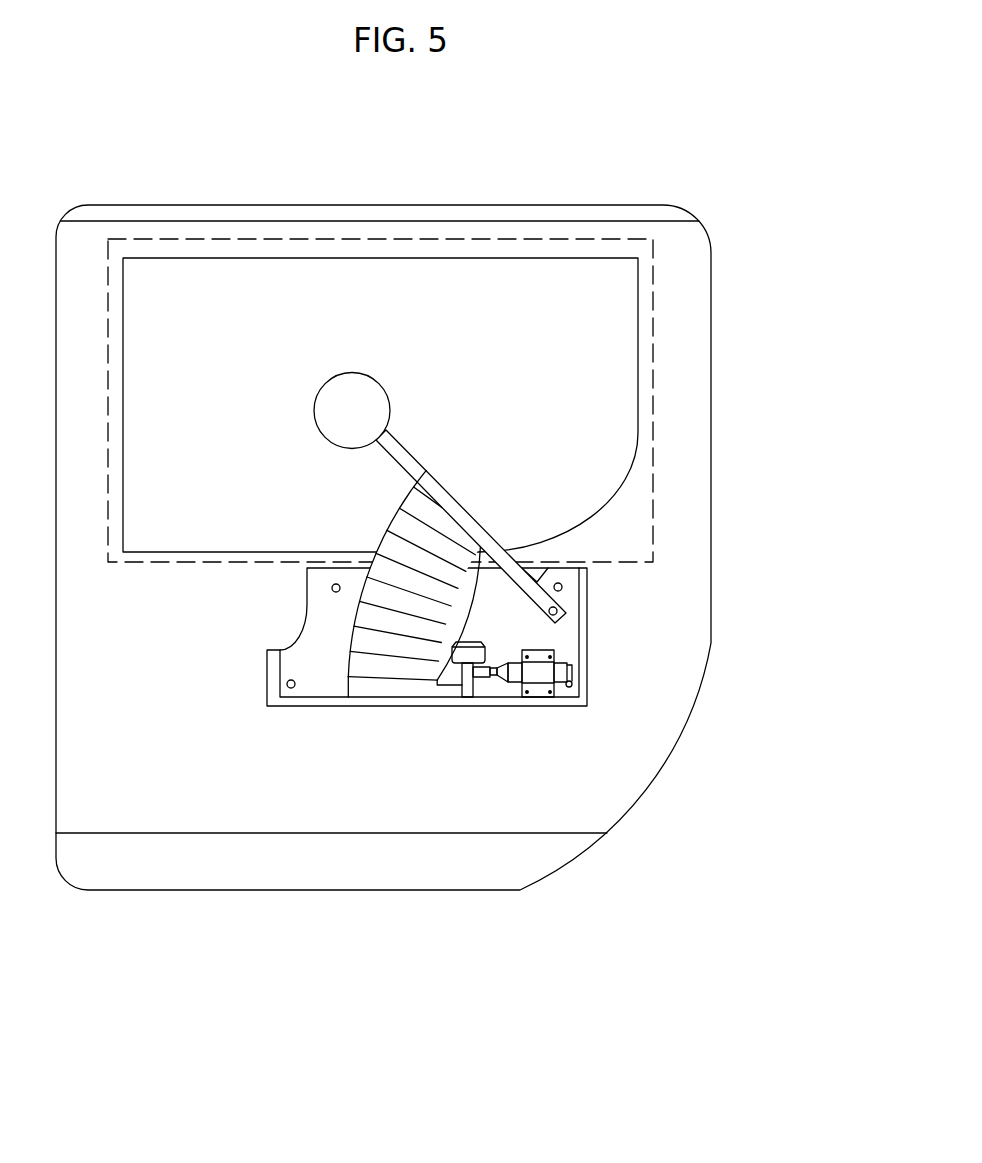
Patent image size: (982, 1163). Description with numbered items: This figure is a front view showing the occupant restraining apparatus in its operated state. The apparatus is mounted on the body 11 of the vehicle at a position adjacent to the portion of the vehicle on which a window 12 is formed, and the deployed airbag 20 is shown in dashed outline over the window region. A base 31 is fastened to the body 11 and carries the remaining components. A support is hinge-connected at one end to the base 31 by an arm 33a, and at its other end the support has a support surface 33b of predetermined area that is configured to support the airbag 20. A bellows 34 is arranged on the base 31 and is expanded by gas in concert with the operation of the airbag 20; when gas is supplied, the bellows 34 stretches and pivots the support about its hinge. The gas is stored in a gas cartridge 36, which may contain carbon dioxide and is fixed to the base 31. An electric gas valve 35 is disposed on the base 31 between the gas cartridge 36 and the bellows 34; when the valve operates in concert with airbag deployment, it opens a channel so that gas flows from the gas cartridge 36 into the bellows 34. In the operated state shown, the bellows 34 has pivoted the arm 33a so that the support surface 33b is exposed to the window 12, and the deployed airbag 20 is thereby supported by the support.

The body 11 is at (691, 352).
The window 12 is at (430, 300).
The airbag 20 is at (550, 238).
The base 31 is at (323, 682).
The arm 33a is at (476, 550).
The support surface 33b is at (340, 392).
The bellows 34 is at (392, 677).
The electric gas valve 35 is at (477, 650).
The gas cartridge 36 is at (561, 677).